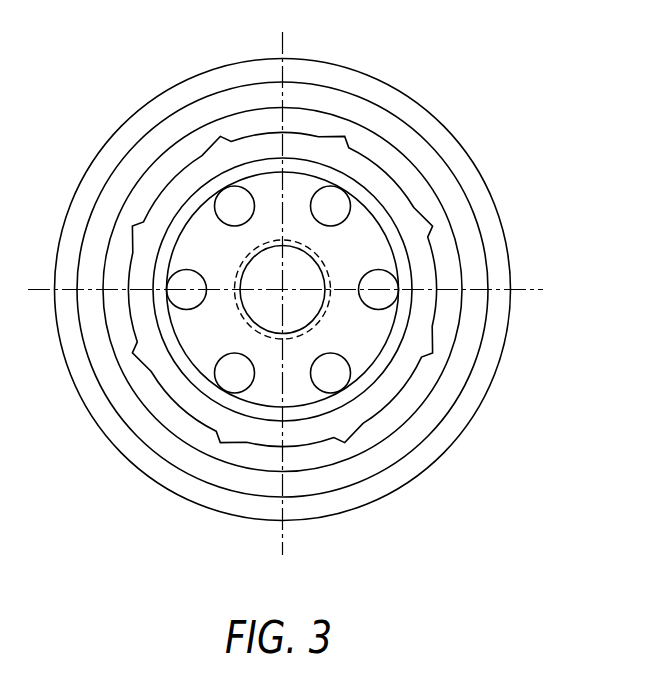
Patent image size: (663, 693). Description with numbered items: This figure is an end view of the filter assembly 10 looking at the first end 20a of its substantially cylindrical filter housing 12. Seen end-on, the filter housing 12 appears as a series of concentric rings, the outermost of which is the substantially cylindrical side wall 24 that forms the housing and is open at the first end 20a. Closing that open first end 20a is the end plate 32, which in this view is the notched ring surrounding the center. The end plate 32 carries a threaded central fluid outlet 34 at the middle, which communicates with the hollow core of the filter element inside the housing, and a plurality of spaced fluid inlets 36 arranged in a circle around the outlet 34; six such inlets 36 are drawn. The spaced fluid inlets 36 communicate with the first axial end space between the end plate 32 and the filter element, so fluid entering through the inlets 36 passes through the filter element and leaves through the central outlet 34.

The filter assembly 10 is at (373, 70).
The filter housing 12 is at (162, 84).
The side wall 24 is at (403, 88).
The end plate 32 is at (242, 138).
The first end 20a is at (505, 259).
The threaded central fluid outlet 34 is at (278, 287).
The fluid inlets 36 is at (236, 216).